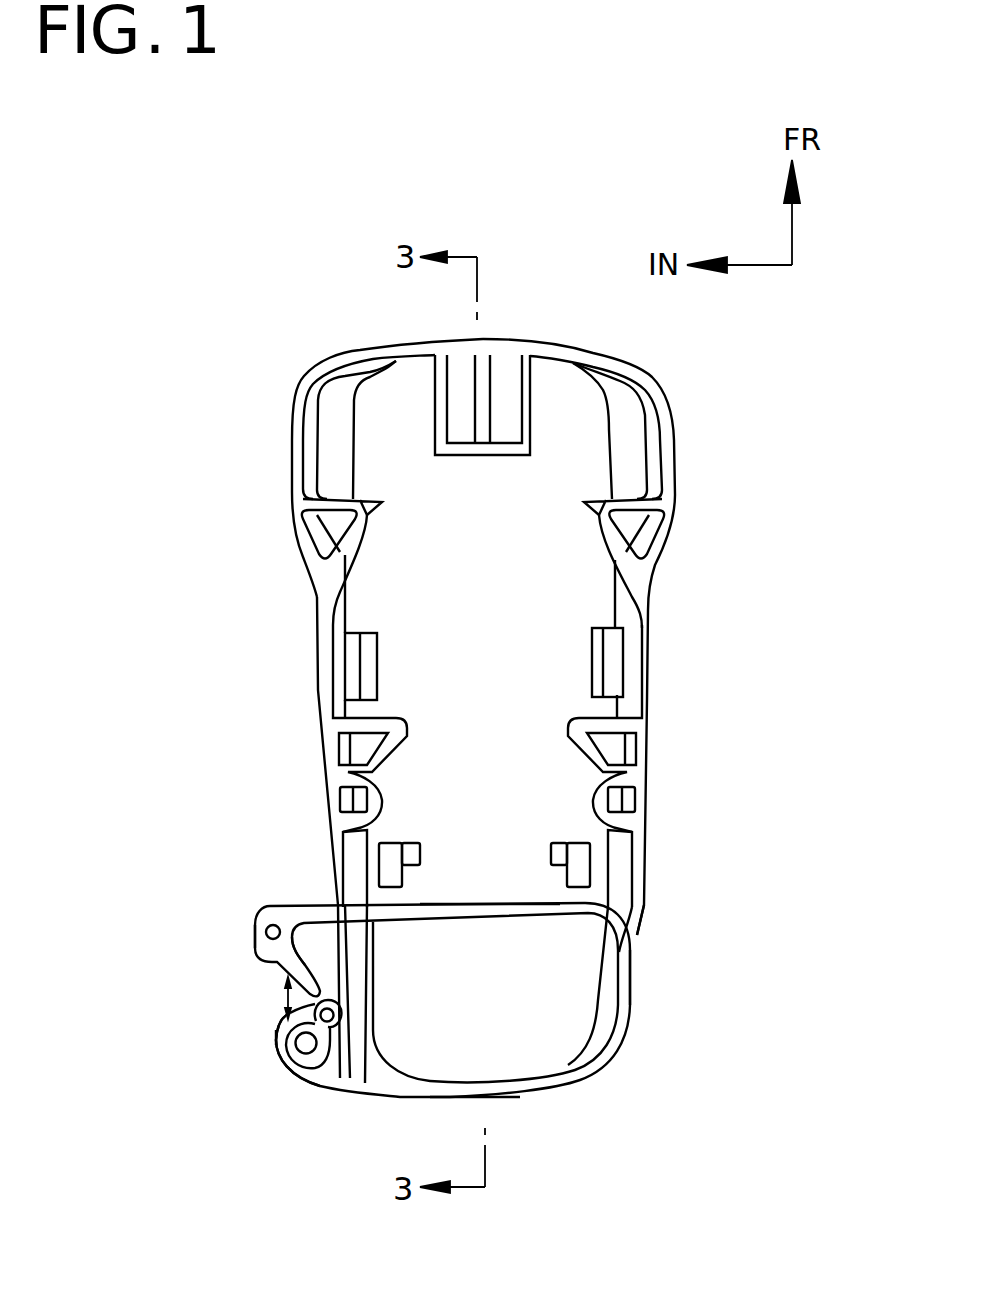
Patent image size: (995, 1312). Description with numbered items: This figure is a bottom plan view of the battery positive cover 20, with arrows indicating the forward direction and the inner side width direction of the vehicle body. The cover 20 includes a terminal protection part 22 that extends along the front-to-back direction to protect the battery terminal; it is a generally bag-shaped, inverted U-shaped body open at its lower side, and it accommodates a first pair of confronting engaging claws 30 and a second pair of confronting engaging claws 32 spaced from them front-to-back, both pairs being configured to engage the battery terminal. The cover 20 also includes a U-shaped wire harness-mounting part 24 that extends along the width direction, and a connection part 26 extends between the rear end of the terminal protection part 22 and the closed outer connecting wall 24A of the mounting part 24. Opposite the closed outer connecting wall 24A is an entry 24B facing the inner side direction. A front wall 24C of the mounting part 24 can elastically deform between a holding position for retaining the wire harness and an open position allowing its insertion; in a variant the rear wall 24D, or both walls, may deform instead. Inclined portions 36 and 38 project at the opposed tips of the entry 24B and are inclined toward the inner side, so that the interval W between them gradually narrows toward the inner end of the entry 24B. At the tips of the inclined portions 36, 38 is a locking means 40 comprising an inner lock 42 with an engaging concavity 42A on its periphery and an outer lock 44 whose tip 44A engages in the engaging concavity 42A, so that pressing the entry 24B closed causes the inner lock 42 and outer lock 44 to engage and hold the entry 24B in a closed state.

The battery positive cover 20 is at (745, 680).
The terminal protection part 22 is at (668, 660).
The wire harness-mounting part 24 is at (528, 1097).
The closed outer connecting wall 24A is at (616, 992).
The entry 24B is at (262, 1011).
The front wall 24C is at (480, 903).
The rear wall 24D is at (460, 1098).
The connection part 26 is at (650, 935).
The first pair of confronting engaging claws 30 is at (592, 673).
The second pair of confronting engaging claws 32 is at (553, 843).
The inclined portion 36 is at (265, 961).
The inclined portion 38 is at (282, 1020).
The locking means 40 is at (465, 979).
The inner lock 42 is at (330, 999).
The engaging concavity 42A is at (313, 988).
The outer lock 44 is at (332, 1032).
The tip 44A is at (287, 1052).
The interval W is at (286, 997).